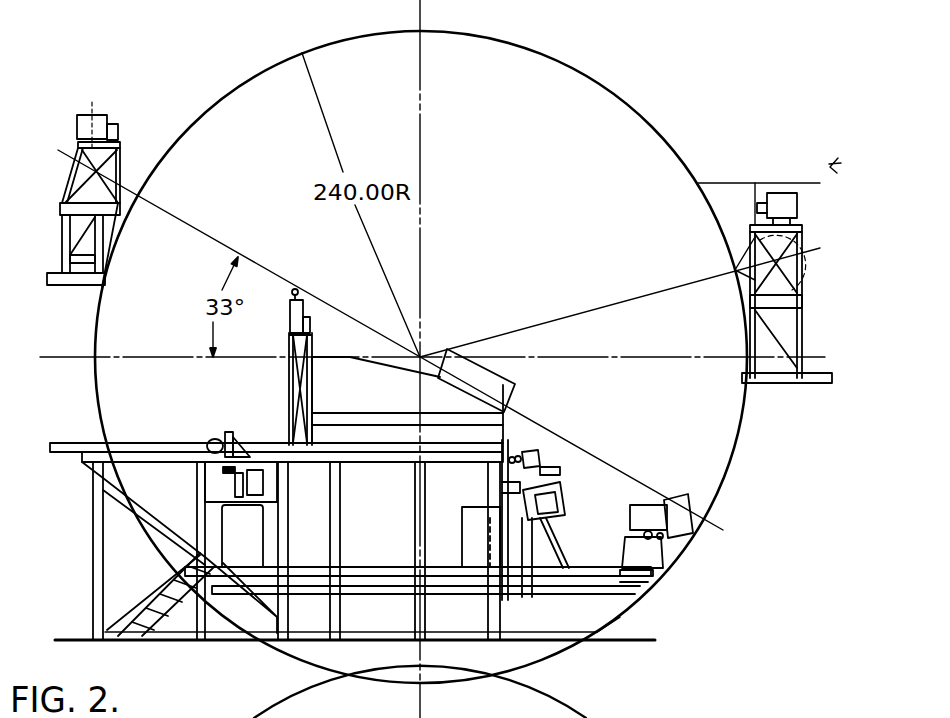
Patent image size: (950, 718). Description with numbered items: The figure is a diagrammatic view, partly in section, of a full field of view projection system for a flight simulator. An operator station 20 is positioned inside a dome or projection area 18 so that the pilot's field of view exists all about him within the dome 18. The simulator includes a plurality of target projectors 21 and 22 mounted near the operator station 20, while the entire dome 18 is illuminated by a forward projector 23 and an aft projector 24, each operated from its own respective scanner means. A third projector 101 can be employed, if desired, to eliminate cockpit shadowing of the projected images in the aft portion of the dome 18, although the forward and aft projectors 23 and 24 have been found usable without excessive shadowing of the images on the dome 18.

The dome 18 is at (603, 87).
The operator station 20 is at (402, 367).
The target projector 21 is at (535, 459).
The target projector 22 is at (232, 442).
The forward projector 23 is at (638, 505).
The aft projector 24 is at (101, 118).
The third projector 101 is at (797, 209).